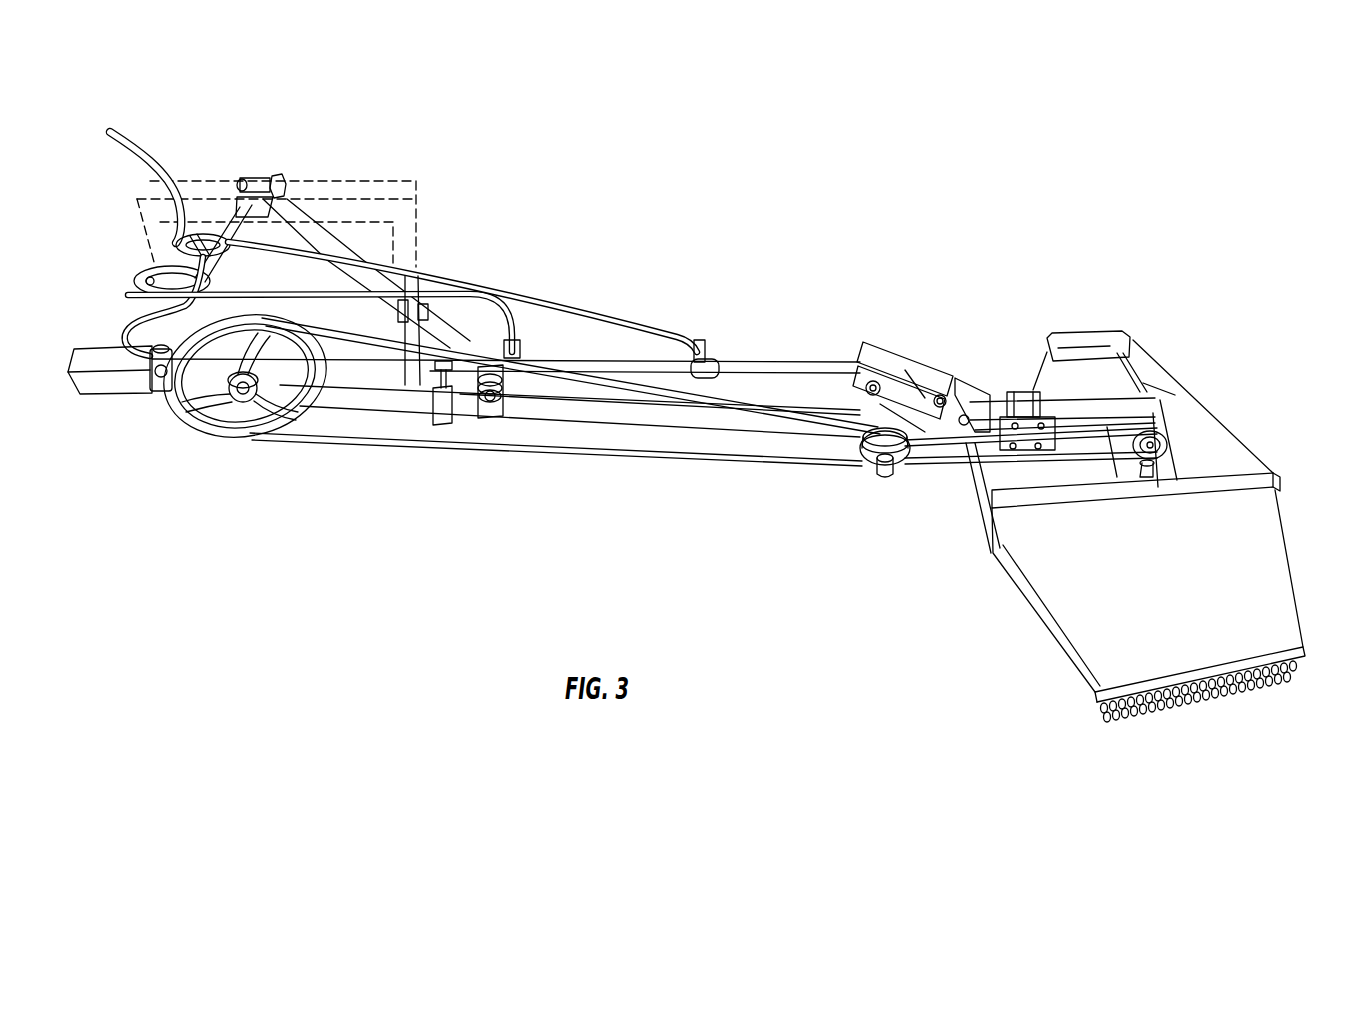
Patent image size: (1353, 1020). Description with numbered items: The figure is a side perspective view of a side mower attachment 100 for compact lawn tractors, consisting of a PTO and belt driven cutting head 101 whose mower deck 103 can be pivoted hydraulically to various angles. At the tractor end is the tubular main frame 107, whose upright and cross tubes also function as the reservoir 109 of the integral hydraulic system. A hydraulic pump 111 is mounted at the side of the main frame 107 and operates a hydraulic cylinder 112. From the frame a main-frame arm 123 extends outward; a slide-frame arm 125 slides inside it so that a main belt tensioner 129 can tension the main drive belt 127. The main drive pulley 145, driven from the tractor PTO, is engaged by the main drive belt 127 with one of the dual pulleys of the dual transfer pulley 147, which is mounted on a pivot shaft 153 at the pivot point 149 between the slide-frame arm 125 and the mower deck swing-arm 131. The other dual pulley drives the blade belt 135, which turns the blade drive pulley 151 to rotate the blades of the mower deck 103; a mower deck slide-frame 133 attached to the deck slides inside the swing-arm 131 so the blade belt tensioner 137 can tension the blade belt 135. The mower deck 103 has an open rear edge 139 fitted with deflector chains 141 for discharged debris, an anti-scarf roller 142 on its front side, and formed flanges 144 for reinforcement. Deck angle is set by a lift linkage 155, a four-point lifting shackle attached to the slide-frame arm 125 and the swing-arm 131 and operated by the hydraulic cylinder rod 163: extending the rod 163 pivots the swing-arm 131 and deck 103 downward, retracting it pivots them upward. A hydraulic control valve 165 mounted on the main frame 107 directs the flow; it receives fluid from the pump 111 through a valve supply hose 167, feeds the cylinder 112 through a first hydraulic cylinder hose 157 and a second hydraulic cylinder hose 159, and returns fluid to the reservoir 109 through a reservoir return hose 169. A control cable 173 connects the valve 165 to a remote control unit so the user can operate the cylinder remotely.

The side mower attachment 100 is at (186, 460).
The cutting head 101 is at (1043, 320).
The mower deck 103 is at (1176, 391).
The main frame 107 is at (236, 184).
The reservoir 109 is at (261, 195).
The hydraulic pump 111 is at (152, 386).
The hydraulic cylinder 112 is at (671, 362).
The main-frame arm 123 is at (367, 403).
The slide-frame arm 125 is at (590, 413).
The main drive belt 127 is at (663, 453).
The main belt tensioner 129 is at (437, 419).
The mower deck swing-arm 131 is at (1000, 396).
The mower deck slide-frame 133 is at (1155, 366).
The blade belt 135 is at (963, 467).
The blade belt tensioner 137 is at (1020, 392).
The rear edge 139 is at (1267, 698).
The deflector chains 141 is at (1093, 705).
The anti-scarf roller 142 is at (1102, 340).
The formed flanges 144 is at (1264, 470).
The main drive pulley 145 is at (266, 424).
The dual transfer pulley 147 is at (864, 465).
The pivot point 149 is at (907, 432).
The blade drive pulley 151 is at (1152, 466).
The pivot shaft 153 is at (882, 477).
The lift linkage 155 is at (912, 346).
The first hydraulic cylinder hose 157 is at (548, 301).
The second hydraulic cylinder hose 159 is at (498, 297).
The hydraulic cylinder rod 163 is at (802, 366).
The hydraulic control valve 165 is at (178, 245).
The valve supply hose 167 is at (128, 327).
The reservoir return hose 169 is at (203, 282).
The control cable 173 is at (136, 142).